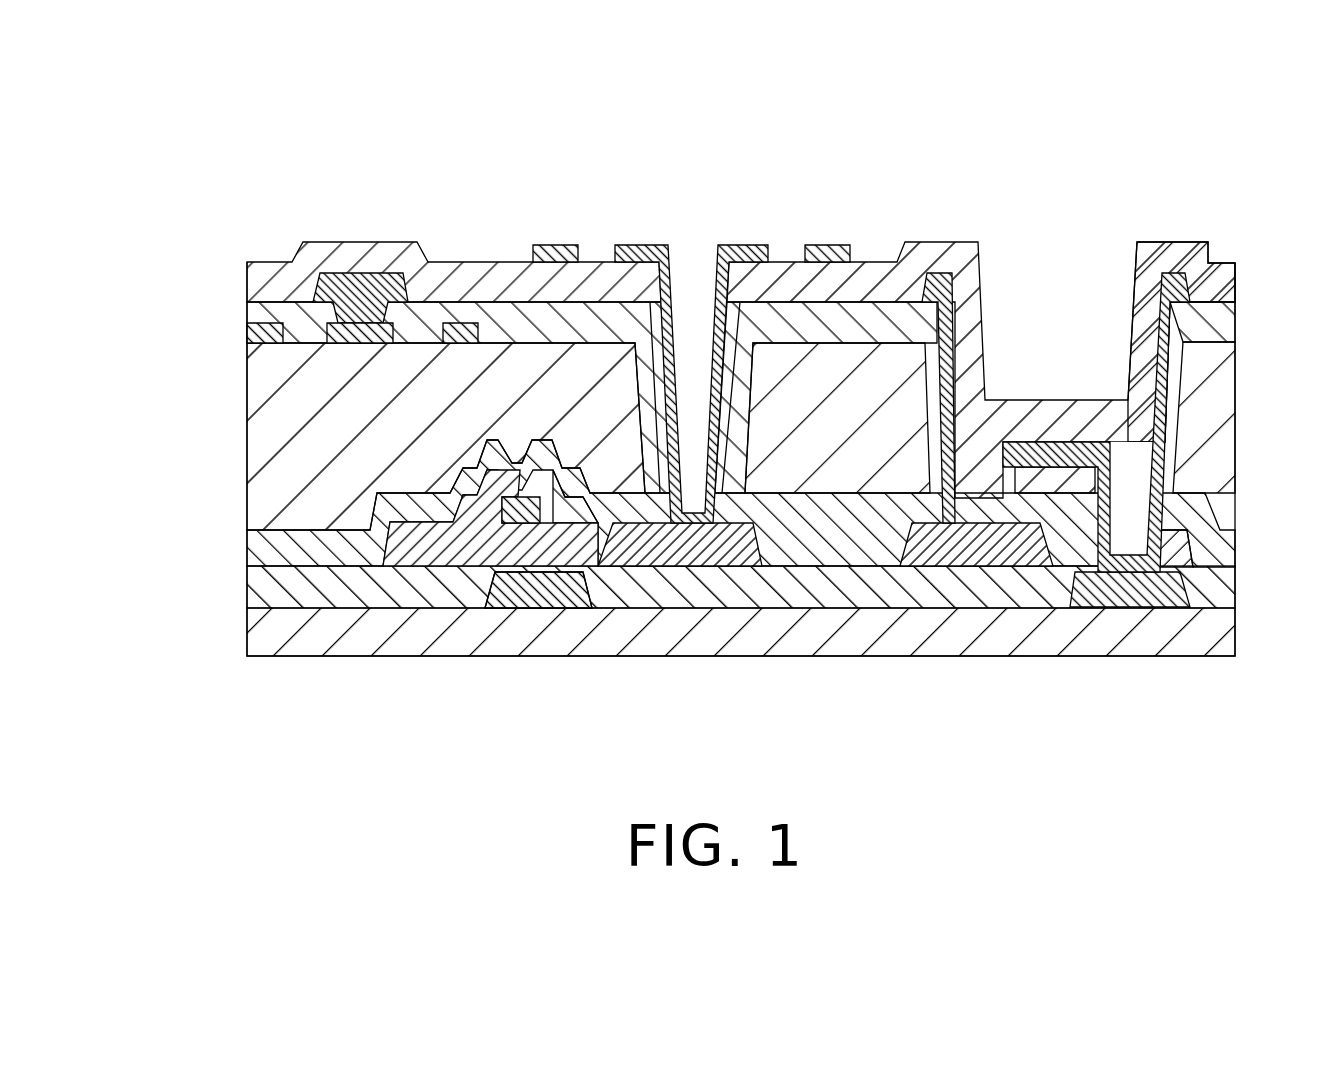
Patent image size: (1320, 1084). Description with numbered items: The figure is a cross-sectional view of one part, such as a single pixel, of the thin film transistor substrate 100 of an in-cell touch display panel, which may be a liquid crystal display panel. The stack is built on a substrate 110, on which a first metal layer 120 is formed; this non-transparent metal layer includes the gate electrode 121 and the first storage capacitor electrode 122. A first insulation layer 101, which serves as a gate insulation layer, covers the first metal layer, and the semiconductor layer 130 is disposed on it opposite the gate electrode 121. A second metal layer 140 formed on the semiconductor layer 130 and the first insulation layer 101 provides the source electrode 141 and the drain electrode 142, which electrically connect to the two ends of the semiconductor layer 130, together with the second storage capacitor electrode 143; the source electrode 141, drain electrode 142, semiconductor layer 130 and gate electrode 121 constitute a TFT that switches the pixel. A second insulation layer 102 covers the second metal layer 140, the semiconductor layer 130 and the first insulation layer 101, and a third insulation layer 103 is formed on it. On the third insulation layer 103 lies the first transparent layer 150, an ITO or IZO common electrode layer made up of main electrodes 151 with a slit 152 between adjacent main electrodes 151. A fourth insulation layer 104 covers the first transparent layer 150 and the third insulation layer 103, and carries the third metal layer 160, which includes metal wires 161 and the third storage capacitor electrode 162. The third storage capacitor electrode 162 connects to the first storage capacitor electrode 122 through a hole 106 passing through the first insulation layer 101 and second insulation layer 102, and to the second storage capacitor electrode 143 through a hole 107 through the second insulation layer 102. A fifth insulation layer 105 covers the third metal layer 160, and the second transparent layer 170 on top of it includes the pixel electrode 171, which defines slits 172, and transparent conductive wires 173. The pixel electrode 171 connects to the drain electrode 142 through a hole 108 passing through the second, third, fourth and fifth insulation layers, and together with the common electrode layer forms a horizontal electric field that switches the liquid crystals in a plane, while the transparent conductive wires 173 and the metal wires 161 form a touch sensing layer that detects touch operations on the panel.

The thin film transistor substrate 100 is at (560, 144).
The first insulation layer 101 is at (808, 590).
The second insulation layer 102 is at (303, 550).
The third insulation layer 103 is at (288, 412).
The fourth insulation layer 104 is at (273, 315).
The fifth insulation layer 105 is at (268, 284).
The hole 106 is at (1128, 492).
The hole 107 is at (990, 462).
The hole 108 is at (690, 240).
The substrate 110 is at (272, 633).
The first metal layer 120 is at (593, 580).
The gate electrode 121 is at (507, 590).
The first storage capacitor electrode 122 is at (1132, 588).
The semiconductor layer 130 is at (558, 530).
The second metal layer 140 is at (420, 548).
The source electrode 141 is at (463, 330).
The drain electrode 142 is at (579, 478).
The second storage capacitor electrode 143 is at (963, 543).
The first transparent layer 150 is at (321, 246).
The main electrode 151 is at (366, 292).
The slit 152 is at (422, 322).
The third metal layer 160 is at (270, 292).
The metal wire 161 is at (318, 272).
The third storage capacitor electrode 162 is at (940, 282).
The second transparent layer 170 is at (837, 253).
The pixel electrode 171 is at (757, 258).
The slit 172 is at (783, 236).
The transparent conductive wire 173 is at (556, 260).